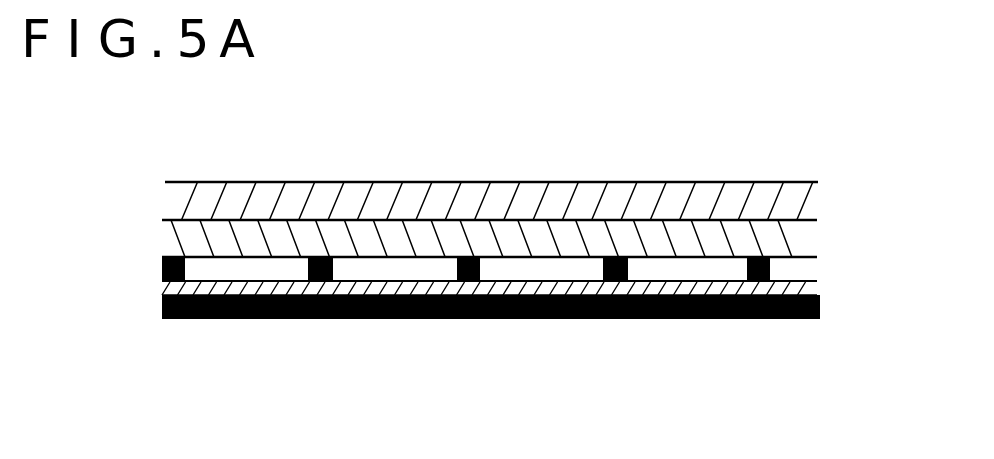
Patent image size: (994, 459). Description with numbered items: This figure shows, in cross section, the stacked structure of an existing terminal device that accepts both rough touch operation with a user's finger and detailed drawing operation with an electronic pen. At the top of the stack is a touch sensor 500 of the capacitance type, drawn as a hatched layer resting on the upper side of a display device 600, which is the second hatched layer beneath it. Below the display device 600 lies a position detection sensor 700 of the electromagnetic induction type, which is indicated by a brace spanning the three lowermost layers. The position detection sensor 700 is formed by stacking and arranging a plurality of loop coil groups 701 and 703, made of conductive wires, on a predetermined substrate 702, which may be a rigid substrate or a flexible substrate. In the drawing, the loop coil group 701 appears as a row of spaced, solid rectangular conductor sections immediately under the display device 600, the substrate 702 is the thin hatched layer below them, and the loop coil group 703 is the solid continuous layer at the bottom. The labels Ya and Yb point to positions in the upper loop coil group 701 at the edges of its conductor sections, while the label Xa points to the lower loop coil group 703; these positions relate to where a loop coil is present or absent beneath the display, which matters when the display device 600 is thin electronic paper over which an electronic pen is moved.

The touch sensor 500 is at (358, 182).
The display device 600 is at (167, 238).
The position detection sensor 700 is at (505, 335).
The loop coil group 701 is at (817, 269).
The substrate 702 is at (820, 289).
The loop coil group 703 is at (820, 312).
The gap region Ya is at (186, 268).
The gap region Yb is at (333, 268).
The region Xa is at (541, 310).